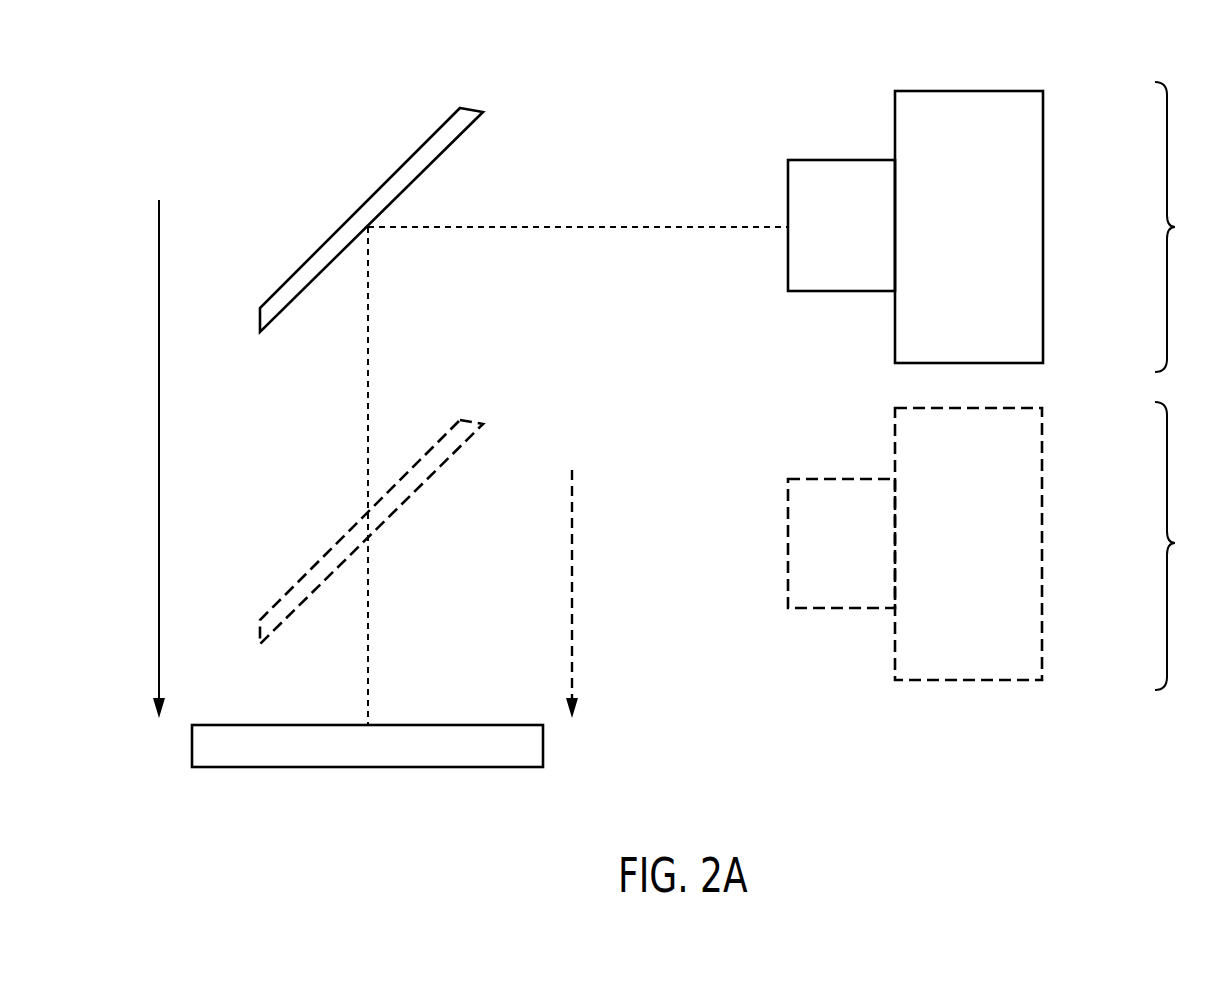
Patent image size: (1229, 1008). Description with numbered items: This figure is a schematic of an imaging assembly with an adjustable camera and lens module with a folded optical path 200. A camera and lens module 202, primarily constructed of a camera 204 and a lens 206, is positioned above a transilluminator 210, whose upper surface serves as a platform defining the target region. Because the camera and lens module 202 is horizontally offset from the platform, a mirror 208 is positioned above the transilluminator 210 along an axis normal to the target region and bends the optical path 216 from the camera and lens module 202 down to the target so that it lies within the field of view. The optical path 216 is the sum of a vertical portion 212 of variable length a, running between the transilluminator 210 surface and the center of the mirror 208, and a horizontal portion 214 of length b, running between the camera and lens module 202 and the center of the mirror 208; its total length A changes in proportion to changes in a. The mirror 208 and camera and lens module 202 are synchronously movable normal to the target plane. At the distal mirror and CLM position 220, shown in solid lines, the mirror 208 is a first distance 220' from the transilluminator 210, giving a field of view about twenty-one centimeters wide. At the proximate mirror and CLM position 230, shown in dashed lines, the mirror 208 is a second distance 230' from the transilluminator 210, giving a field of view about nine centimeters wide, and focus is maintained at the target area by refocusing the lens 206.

The imaging assembly with an adjustable camera and lens module with a folded optical 200 is at (628, 86).
The camera and lens module 202 is at (893, 91).
The camera 204 is at (1028, 146).
The lens 206 is at (843, 178).
The mirror 208 is at (350, 214).
The transilluminator 210 is at (543, 745).
The vertical portion of the optical path 212 is at (365, 462).
The horizontal portion of the optical path 214 is at (531, 226).
The optical path 216 is at (447, 227).
The distal mirror and CLM position 220 is at (1182, 227).
The proximate mirror and CLM position 230 is at (999, 546).
The first distance 220' is at (190, 454).
The second distance 230' is at (603, 594).